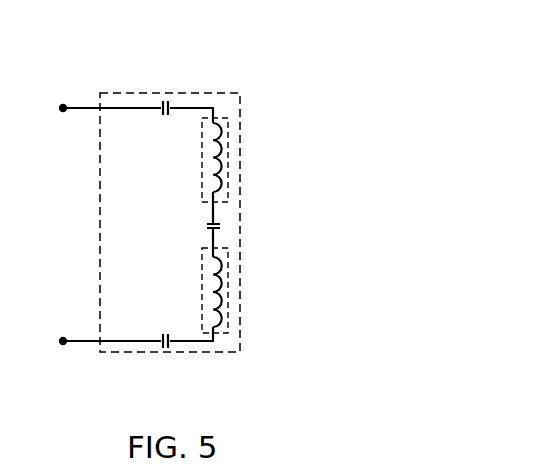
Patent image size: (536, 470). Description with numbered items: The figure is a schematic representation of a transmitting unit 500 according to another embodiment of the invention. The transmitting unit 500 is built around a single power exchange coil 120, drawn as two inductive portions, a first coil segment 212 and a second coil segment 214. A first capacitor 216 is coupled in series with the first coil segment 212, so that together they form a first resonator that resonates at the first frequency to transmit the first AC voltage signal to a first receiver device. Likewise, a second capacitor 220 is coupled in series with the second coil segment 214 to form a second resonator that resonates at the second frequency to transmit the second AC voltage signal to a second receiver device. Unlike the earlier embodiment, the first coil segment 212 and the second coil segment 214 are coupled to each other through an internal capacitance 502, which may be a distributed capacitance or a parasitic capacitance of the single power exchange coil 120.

The transmitting unit 500 is at (330, 53).
The first capacitor 216 is at (165, 101).
The second capacitor 220 is at (162, 343).
The single power exchange coil 120 is at (228, 116).
The first coil segment 212 is at (228, 160).
The internal capacitance 502 is at (218, 224).
The second coil segment 214 is at (228, 290).